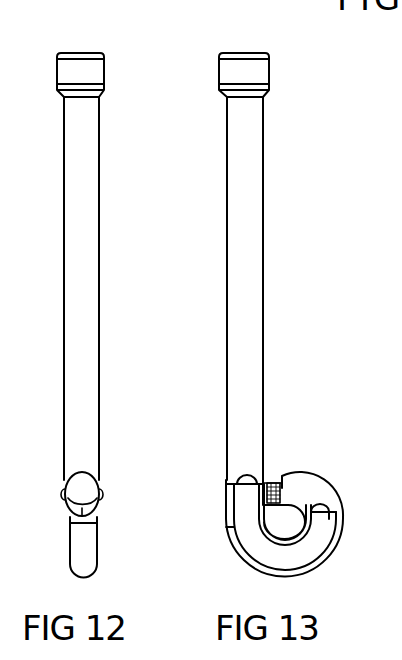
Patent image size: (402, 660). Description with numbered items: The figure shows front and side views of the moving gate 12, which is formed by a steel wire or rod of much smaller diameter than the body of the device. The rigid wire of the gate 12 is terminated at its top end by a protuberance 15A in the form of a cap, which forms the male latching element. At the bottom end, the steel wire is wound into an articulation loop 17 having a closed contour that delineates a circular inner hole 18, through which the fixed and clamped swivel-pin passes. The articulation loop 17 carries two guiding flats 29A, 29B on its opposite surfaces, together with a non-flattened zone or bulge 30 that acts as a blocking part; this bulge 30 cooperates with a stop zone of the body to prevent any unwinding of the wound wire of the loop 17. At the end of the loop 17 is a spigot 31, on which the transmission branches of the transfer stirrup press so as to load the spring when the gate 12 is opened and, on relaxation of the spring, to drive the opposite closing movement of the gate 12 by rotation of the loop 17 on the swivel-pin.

In FIG. 12, the gate 12 is at (78, 303).
In FIG. 13, the gate 12 is at (242, 303).
In FIG. 12, the protuberance 15A is at (73, 73).
In FIG. 13, the protuberance 15A is at (237, 73).
In FIG. 12, the articulation loop 17 is at (79, 537).
In FIG. 13, the articulation loop 17 is at (323, 521).
In FIG. 13, the circular inner hole 18 is at (285, 525).
In FIG. 12, the guiding flat 29A is at (97, 570).
In FIG. 12, the guiding flat 29B is at (70, 570).
In FIG. 13, the guiding flat 29B is at (272, 555).
In FIG. 12, the bulge 30 is at (86, 482).
In FIG. 13, the bulge 30 is at (295, 485).
In FIG. 13, the spigot 31 is at (273, 487).